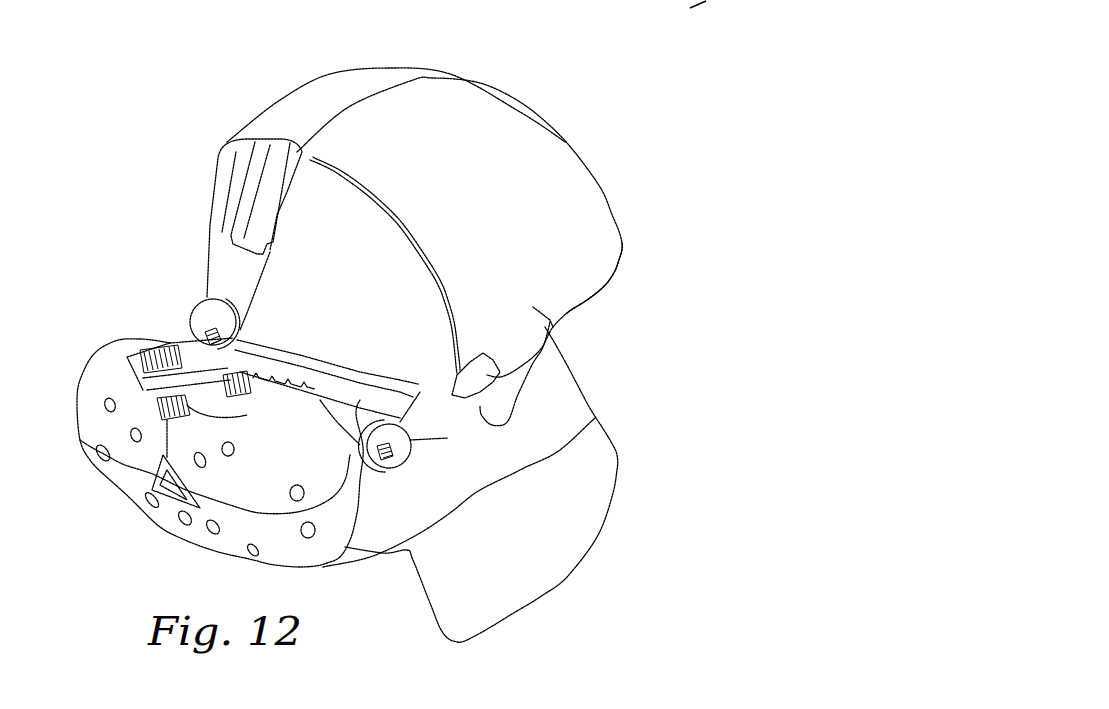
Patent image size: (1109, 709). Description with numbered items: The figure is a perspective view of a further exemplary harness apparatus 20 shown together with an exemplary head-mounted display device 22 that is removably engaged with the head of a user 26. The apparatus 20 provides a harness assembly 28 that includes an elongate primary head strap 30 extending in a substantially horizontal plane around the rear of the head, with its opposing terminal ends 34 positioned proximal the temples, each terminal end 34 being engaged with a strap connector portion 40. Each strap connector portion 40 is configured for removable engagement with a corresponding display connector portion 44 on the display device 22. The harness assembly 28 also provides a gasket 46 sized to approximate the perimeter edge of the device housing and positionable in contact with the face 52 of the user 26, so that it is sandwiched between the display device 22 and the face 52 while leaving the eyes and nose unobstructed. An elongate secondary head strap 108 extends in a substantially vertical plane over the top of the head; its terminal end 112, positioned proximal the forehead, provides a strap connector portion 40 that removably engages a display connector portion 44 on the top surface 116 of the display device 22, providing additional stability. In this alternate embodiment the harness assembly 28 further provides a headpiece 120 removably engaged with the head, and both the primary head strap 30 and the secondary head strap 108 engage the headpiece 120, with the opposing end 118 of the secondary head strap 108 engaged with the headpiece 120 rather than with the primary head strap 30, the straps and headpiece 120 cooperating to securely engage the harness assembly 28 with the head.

The harness apparatus 20 is at (183, 86).
The head-mounted display device 22 is at (165, 537).
The user 26 is at (632, 449).
The harness assembly 28 is at (598, 306).
The primary head strap 30 is at (497, 374).
The terminal ends 34 is at (457, 392).
The strap connector portion 40 is at (217, 270).
The display connector portion 44 is at (200, 315).
The gasket 46 is at (323, 360).
The face 52 is at (351, 540).
The secondary head strap 108 is at (255, 172).
The terminal end 112 is at (252, 230).
The top surface 116 is at (163, 360).
The opposing end 118 is at (297, 152).
The headpiece 120 is at (500, 160).